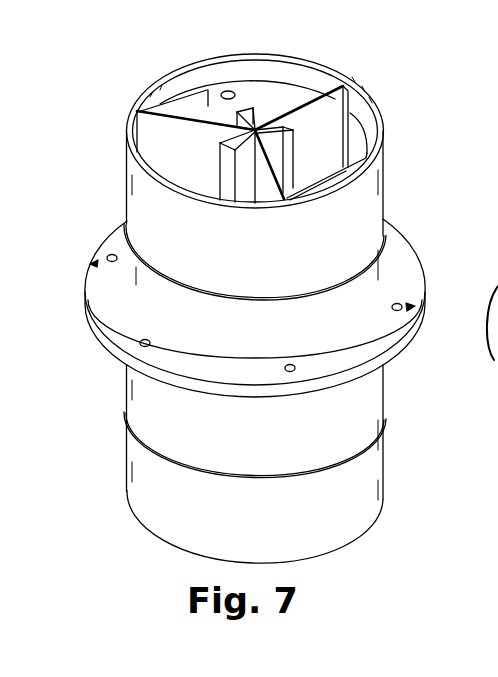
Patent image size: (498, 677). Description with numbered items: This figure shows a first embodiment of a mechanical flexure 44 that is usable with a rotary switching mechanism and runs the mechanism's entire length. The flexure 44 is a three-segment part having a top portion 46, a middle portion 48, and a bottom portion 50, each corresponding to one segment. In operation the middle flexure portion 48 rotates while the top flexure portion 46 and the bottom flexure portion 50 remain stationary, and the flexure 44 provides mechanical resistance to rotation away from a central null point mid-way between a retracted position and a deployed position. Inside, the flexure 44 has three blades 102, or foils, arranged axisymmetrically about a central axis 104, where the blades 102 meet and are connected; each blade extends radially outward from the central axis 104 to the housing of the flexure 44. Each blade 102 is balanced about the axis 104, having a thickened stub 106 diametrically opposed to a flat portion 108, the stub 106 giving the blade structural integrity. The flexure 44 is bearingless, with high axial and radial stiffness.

The mechanical flexure 44 is at (103, 117).
The top flexure portion 46 is at (147, 213).
The middle flexure portion 48 is at (153, 307).
The bottom flexure portion 50 is at (147, 460).
The blades 102 is at (171, 92).
The central axis 104 is at (256, 130).
The thickened stub 106 is at (253, 107).
The flat portion 108 is at (336, 76).